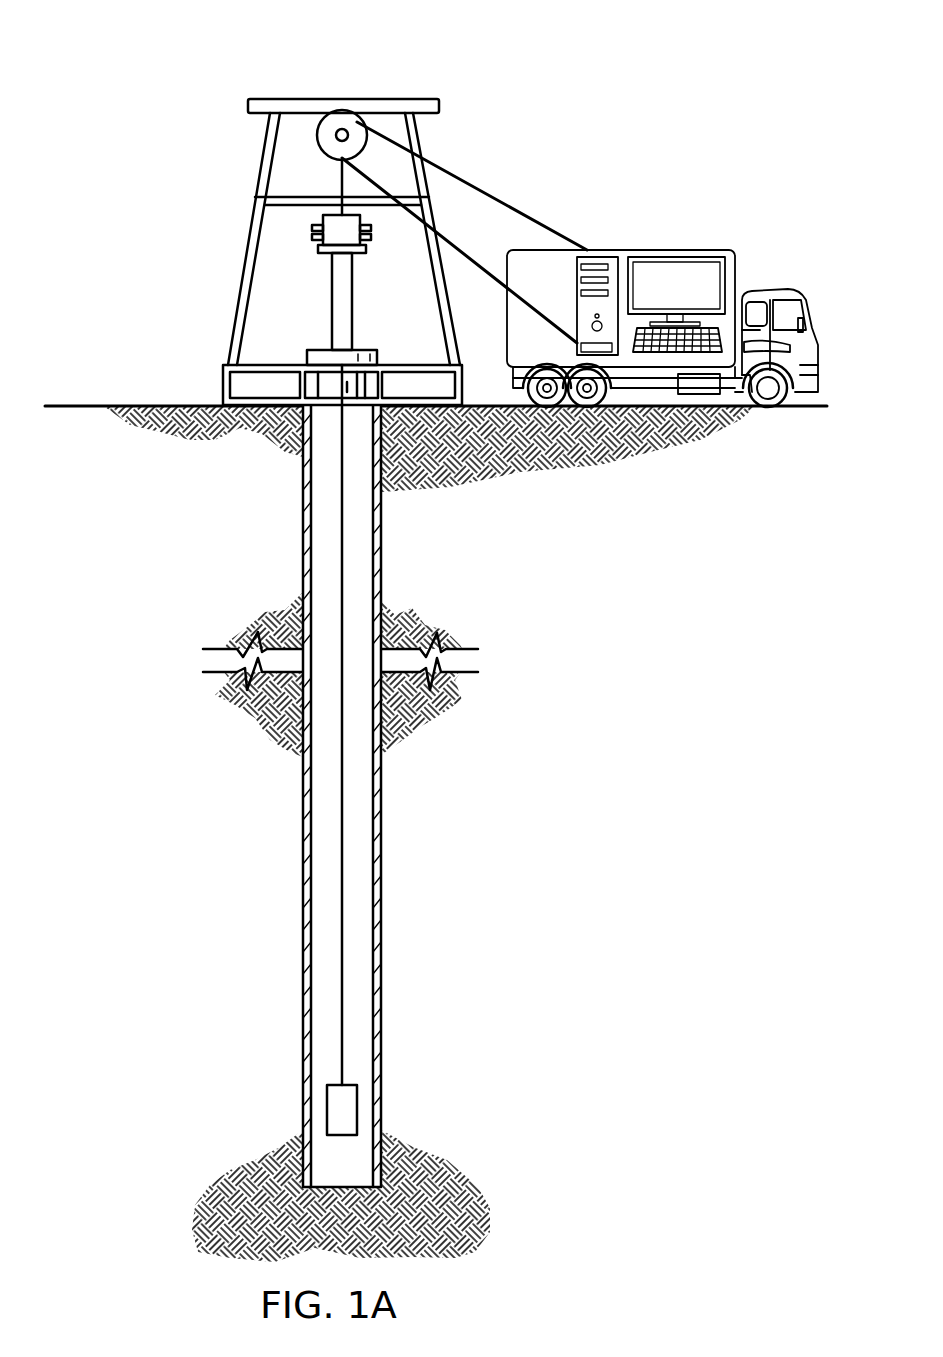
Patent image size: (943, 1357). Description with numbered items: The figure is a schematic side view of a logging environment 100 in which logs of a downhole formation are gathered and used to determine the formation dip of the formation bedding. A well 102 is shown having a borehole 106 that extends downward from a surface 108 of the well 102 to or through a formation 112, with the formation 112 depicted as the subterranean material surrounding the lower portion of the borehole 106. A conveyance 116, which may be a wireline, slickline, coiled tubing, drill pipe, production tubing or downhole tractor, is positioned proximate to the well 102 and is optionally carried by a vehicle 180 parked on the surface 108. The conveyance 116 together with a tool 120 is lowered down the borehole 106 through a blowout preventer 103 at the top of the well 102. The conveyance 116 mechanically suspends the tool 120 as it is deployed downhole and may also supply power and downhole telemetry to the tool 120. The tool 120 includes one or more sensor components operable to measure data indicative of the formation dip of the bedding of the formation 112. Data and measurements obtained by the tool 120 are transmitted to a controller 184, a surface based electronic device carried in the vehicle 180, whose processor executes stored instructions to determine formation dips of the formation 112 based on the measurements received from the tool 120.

The logging environment 100 is at (158, 62).
The well 102 is at (374, 336).
The blowout preventer 103 is at (332, 287).
The borehole 106 is at (377, 547).
The surface 108 is at (162, 404).
The formation 112 is at (487, 1210).
The conveyance 116 is at (340, 913).
The tool 120 is at (326, 1097).
The vehicle 180 is at (655, 250).
The controller 184 is at (598, 257).